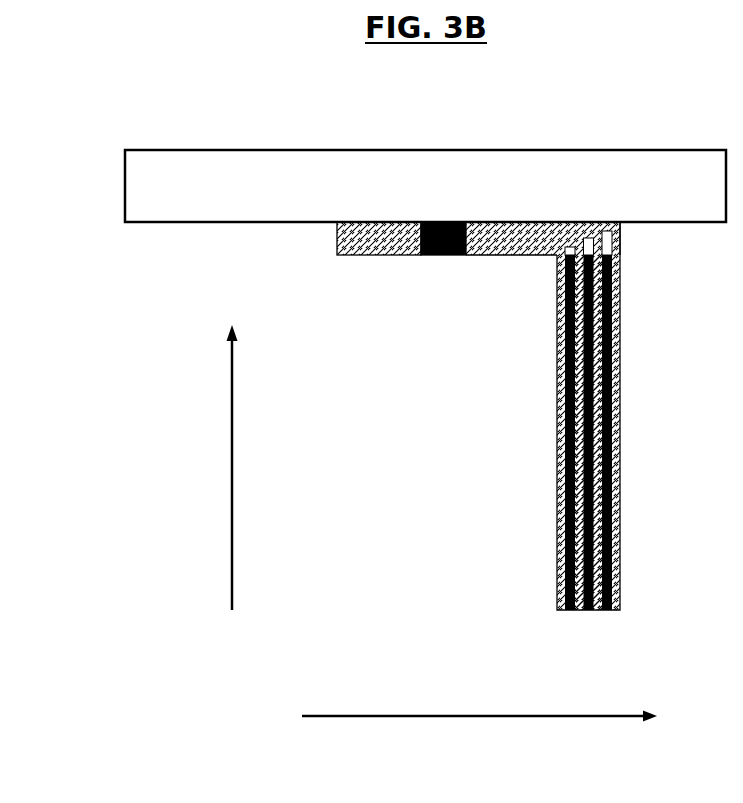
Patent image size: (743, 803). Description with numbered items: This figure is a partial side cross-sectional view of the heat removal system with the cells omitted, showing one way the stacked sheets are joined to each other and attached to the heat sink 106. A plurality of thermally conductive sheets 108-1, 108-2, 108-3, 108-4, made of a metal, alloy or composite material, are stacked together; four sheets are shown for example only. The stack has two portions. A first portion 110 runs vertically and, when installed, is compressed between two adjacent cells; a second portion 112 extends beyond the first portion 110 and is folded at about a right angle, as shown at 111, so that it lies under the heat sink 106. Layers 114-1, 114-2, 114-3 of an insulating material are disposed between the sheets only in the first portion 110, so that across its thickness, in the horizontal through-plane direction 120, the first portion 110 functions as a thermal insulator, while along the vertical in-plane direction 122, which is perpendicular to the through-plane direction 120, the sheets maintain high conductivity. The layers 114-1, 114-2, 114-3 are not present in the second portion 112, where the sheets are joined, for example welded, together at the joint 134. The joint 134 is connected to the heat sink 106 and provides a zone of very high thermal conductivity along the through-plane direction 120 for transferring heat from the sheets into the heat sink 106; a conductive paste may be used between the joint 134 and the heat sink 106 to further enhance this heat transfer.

The heat sink 106 is at (430, 148).
The sheet 108-1 is at (357, 256).
The sheet 108-2 is at (580, 612).
The sheet 108-3 is at (598, 612).
The sheet 108-4 is at (620, 355).
The first portion 110 is at (663, 442).
The fold 111 is at (620, 222).
The second portion 112 is at (502, 274).
The layer of insulating material 114-1 is at (570, 402).
The layer of insulating material 114-2 is at (585, 450).
The layer of insulating material 114-3 is at (603, 510).
The through-plane direction 120 is at (548, 716).
The in-plane direction 122 is at (232, 470).
The joint 134 is at (445, 256).